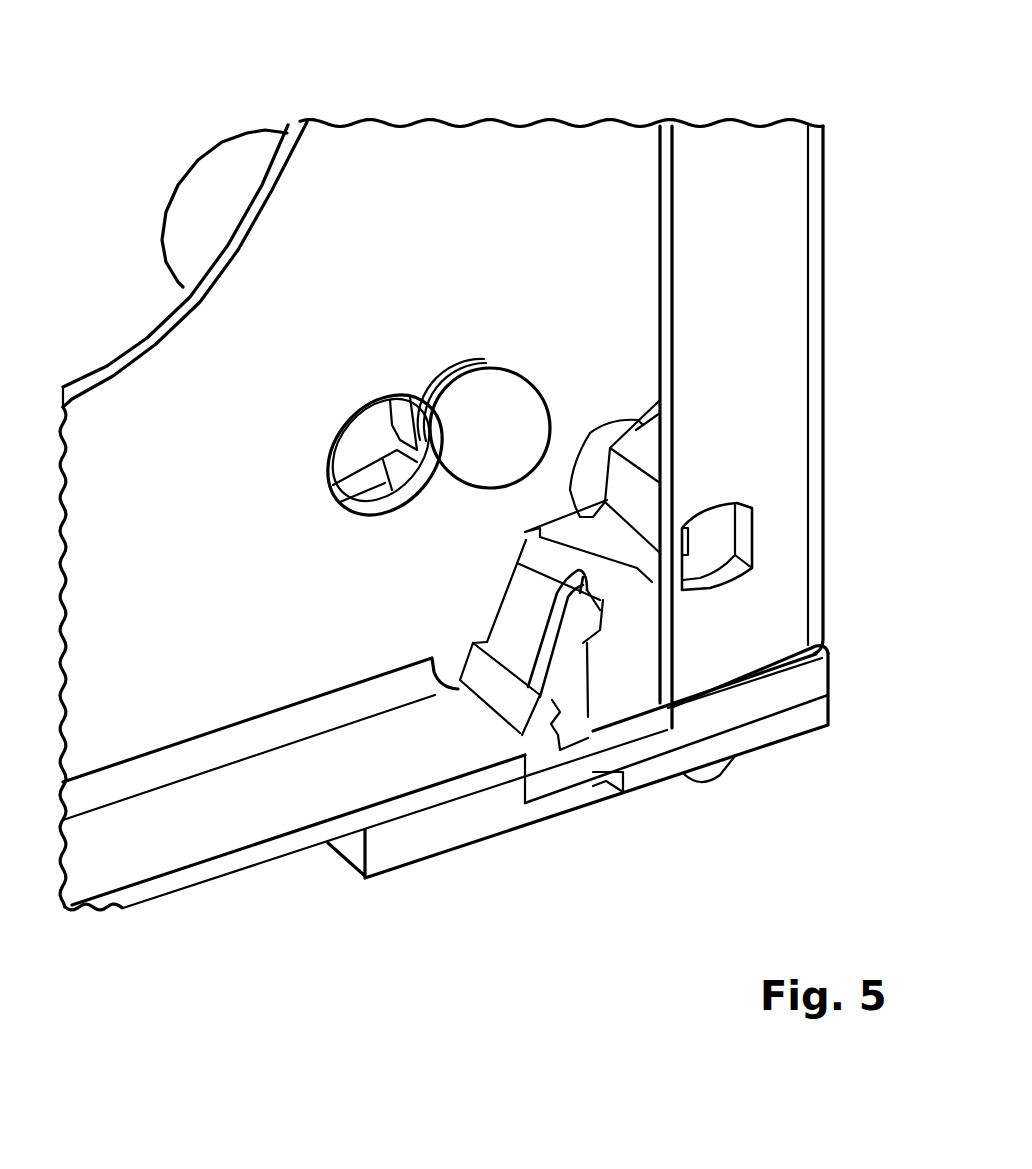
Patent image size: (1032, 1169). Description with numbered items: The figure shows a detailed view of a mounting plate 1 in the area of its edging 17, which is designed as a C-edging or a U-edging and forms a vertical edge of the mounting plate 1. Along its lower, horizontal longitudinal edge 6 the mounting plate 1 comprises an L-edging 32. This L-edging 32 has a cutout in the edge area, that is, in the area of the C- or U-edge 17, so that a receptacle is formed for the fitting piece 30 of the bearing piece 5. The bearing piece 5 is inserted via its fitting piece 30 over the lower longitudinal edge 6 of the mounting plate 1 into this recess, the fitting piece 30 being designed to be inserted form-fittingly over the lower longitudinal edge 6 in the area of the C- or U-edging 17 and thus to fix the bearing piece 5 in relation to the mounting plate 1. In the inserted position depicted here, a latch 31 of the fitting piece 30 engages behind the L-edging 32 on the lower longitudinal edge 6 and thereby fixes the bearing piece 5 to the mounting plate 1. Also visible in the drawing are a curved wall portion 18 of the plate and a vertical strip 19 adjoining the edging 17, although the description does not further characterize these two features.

The mounting plate 1 is at (510, 93).
The bearing piece 5 is at (482, 849).
The lower longitudinal edge 6 is at (134, 908).
The edging 17 is at (836, 114).
The curved wall 18 is at (122, 322).
The strip 19 is at (725, 162).
The fitting piece 30 is at (630, 678).
The latch 31 is at (483, 710).
The L-edging 32 is at (248, 813).